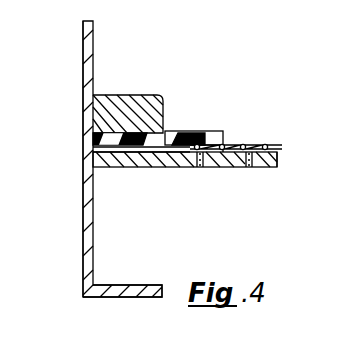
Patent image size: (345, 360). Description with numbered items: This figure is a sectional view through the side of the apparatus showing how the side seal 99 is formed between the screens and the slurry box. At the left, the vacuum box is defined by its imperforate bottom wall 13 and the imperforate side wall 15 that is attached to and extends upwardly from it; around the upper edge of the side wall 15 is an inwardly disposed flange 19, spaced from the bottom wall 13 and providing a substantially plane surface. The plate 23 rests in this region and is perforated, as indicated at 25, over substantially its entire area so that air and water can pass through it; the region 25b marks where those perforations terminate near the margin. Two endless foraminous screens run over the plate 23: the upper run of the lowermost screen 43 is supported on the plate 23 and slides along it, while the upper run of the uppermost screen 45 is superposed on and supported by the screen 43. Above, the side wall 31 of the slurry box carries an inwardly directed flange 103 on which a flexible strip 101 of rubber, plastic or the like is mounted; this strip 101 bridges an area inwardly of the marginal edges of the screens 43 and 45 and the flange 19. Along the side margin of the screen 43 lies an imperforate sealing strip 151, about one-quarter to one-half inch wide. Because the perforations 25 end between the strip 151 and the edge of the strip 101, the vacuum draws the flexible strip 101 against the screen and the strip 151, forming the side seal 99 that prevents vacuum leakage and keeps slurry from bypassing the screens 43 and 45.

The bottom wall 13 is at (135, 297).
The side wall 15 is at (83, 245).
The side wall of slurry box 31 is at (93, 42).
The inwardly disposed flange 19 is at (120, 170).
The side seal 99 is at (130, 91).
The inwardly directed flange 103 is at (151, 96).
The flexible strip 101 is at (188, 132).
The sealing strip 151 is at (158, 167).
The fastener 25b is at (199, 167).
The perforations 25 is at (247, 167).
The plate 23 is at (265, 167).
The lowermost screen 43 is at (271, 148).
The uppermost screen 45 is at (268, 144).